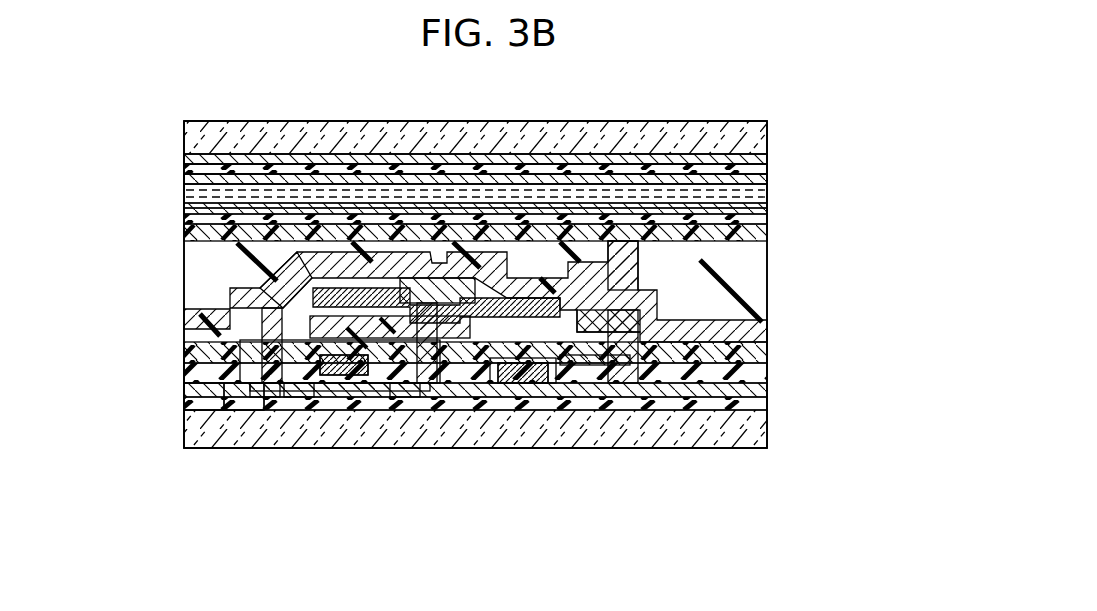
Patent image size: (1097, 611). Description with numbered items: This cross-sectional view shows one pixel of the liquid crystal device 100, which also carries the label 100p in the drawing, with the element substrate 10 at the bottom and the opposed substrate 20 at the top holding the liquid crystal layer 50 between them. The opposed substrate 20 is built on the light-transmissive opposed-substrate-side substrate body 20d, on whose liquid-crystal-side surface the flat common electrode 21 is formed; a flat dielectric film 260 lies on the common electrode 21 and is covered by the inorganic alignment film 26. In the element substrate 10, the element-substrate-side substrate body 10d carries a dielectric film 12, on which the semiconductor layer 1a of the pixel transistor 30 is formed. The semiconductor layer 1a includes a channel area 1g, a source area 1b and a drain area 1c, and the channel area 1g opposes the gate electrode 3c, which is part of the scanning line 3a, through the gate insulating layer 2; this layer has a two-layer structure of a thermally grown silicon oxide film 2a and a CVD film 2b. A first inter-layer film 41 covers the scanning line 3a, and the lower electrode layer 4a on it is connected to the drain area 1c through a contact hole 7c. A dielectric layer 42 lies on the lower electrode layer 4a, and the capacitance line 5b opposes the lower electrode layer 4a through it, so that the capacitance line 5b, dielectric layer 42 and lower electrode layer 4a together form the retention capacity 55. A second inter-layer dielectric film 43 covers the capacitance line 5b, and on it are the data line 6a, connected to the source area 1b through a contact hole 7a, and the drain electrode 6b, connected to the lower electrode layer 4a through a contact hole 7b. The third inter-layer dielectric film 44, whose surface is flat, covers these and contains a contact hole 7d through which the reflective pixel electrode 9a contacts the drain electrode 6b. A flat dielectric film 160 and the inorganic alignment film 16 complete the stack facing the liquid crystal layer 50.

The liquid crystal device 100 is at (543, 241).
The electro-optical device 100p is at (800, 108).
The opposed-substrate-side substrate body 20d is at (768, 138).
The opposed substrate 20 is at (170, 122).
The common electrode 21 is at (690, 155).
The dielectric film 260 is at (655, 165).
The alignment film 26 is at (607, 177).
The liquid crystal layer 50 is at (170, 180).
The alignment film 16 is at (567, 203).
The dielectric film 160 is at (523, 220).
The pixel electrode 9a is at (768, 218).
The element substrate 10 is at (170, 230).
The third inter-layer dielectric film 44 is at (755, 275).
The second inter-layer dielectric film 43 is at (765, 320).
The drain electrode 6b is at (657, 298).
The data line 6a is at (317, 261).
The contact hole 7d is at (630, 268).
The contact hole 7a is at (268, 340).
The contact hole 7c is at (428, 392).
The contact hole 7b is at (640, 395).
The first inter-layer film 41 is at (765, 352).
The retention capacity 55 is at (580, 530).
The capacitance line 5b is at (482, 400).
The lower electrode layer 4a is at (505, 400).
The dielectric layer 42 is at (528, 390).
The scanning line 3a is at (305, 400).
The gate electrode 3c is at (300, 460).
The pixel transistor 30 is at (379, 445).
The channel area 1g is at (338, 396).
The semiconductor layer 1a is at (300, 396).
The source area 1b is at (262, 396).
The drain area 1c is at (402, 396).
The dielectric film 12 is at (765, 405).
The element-substrate-side substrate body 10d is at (765, 432).
The CVD film 2b is at (188, 450).
The silicon oxide film 2a is at (235, 450).
The gate insulating layer 2 is at (230, 520).